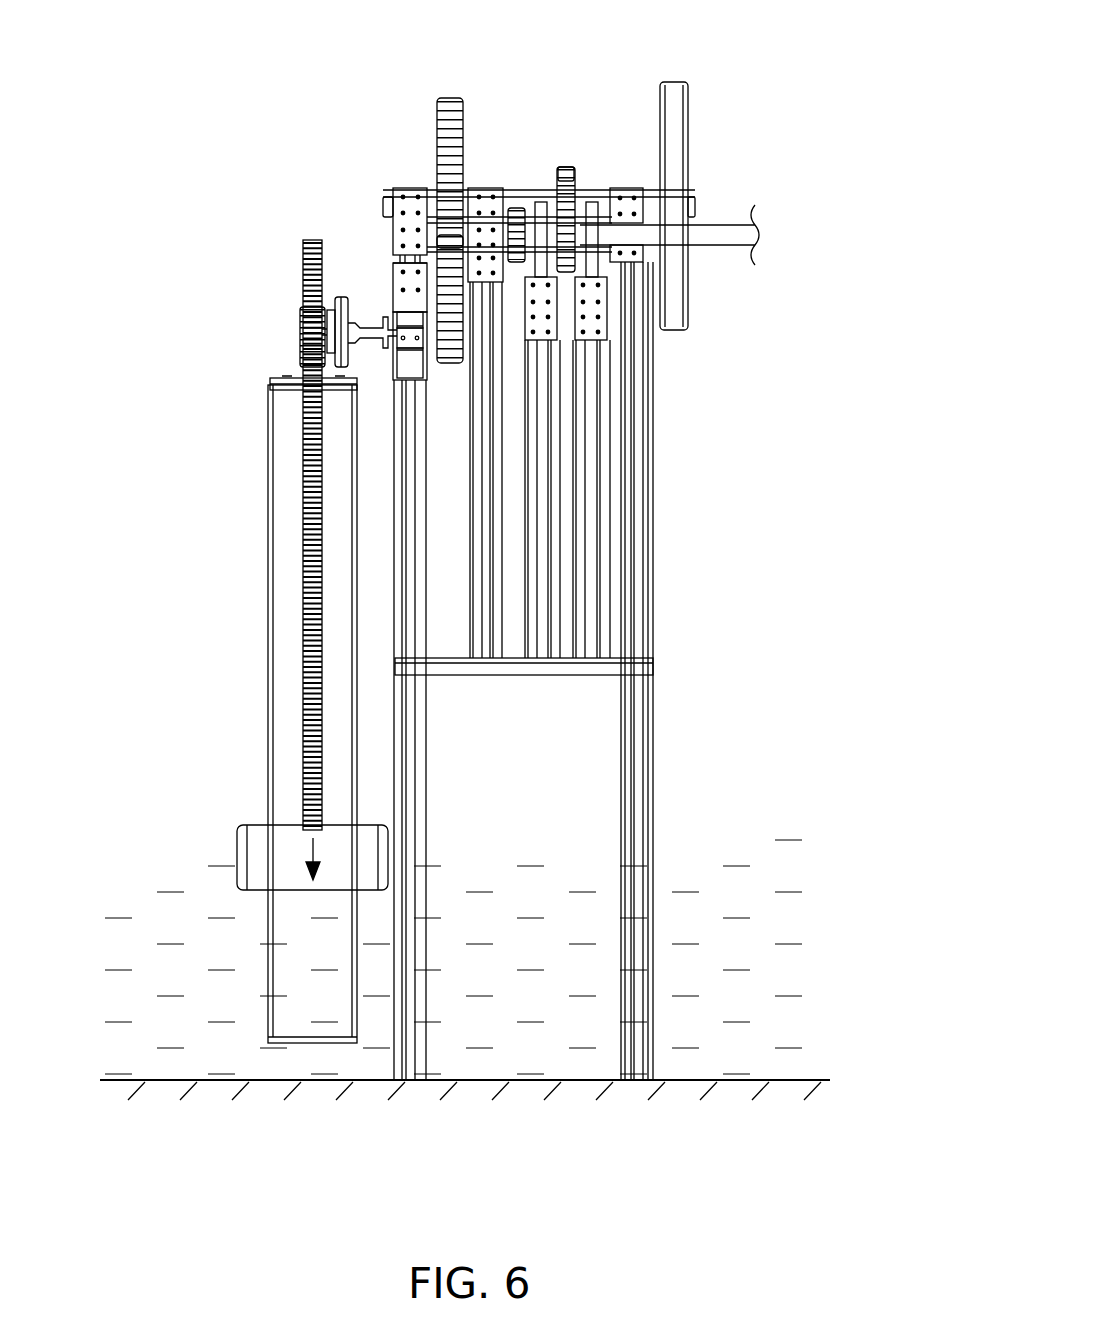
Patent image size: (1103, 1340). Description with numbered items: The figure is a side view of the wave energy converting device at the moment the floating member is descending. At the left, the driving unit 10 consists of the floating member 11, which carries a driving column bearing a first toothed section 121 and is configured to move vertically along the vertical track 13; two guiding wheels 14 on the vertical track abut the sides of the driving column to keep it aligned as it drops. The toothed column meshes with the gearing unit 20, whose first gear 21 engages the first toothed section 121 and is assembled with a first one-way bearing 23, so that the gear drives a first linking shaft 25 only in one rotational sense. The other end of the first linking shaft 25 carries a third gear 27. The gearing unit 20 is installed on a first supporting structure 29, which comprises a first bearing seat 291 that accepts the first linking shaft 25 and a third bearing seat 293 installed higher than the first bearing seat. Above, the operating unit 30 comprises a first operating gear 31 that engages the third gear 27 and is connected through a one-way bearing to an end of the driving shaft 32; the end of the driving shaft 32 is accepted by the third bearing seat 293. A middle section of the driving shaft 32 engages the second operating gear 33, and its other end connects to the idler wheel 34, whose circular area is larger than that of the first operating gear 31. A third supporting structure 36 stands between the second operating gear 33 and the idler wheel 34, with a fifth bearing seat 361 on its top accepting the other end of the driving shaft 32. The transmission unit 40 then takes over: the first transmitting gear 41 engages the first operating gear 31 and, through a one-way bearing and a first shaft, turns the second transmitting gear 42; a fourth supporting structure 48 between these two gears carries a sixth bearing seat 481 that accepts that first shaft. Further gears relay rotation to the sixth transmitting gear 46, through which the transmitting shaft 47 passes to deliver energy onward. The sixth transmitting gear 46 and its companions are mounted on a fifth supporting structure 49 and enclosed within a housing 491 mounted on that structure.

The driving unit 10 is at (243, 641).
The floating member 11 is at (258, 853).
The vertical track 13 is at (272, 447).
The guiding wheels 14 is at (275, 387).
The first toothed section 121 is at (305, 495).
The gearing unit 20 is at (273, 340).
The first gear 21 is at (310, 314).
The first one-way bearing 23 is at (343, 350).
The first linking shaft 25 is at (404, 355).
The third gear 27 is at (448, 368).
The first supporting structure 29 is at (312, 589).
The first bearing seat 291 is at (405, 335).
The third bearing seat 293 is at (406, 205).
The operating unit 30 is at (687, 545).
The first operating gear 31 is at (447, 98).
The driving shaft 32 is at (388, 203).
The second operating gear 33 is at (563, 170).
The idler wheel 34 is at (674, 95).
The third supporting structure 36 is at (627, 358).
The fifth bearing seat 361 is at (630, 193).
The transmission unit 40 is at (609, 354).
The first transmitting gear 41 is at (425, 230).
The second transmitting gear 42 is at (516, 208).
The sixth transmitting gear 46 is at (575, 178).
The transmitting shaft 47 is at (727, 235).
The fourth supporting structure 48 is at (488, 494).
The sixth bearing seat 481 is at (485, 205).
The fifth supporting structure 49 is at (587, 392).
The housing 491 is at (595, 262).